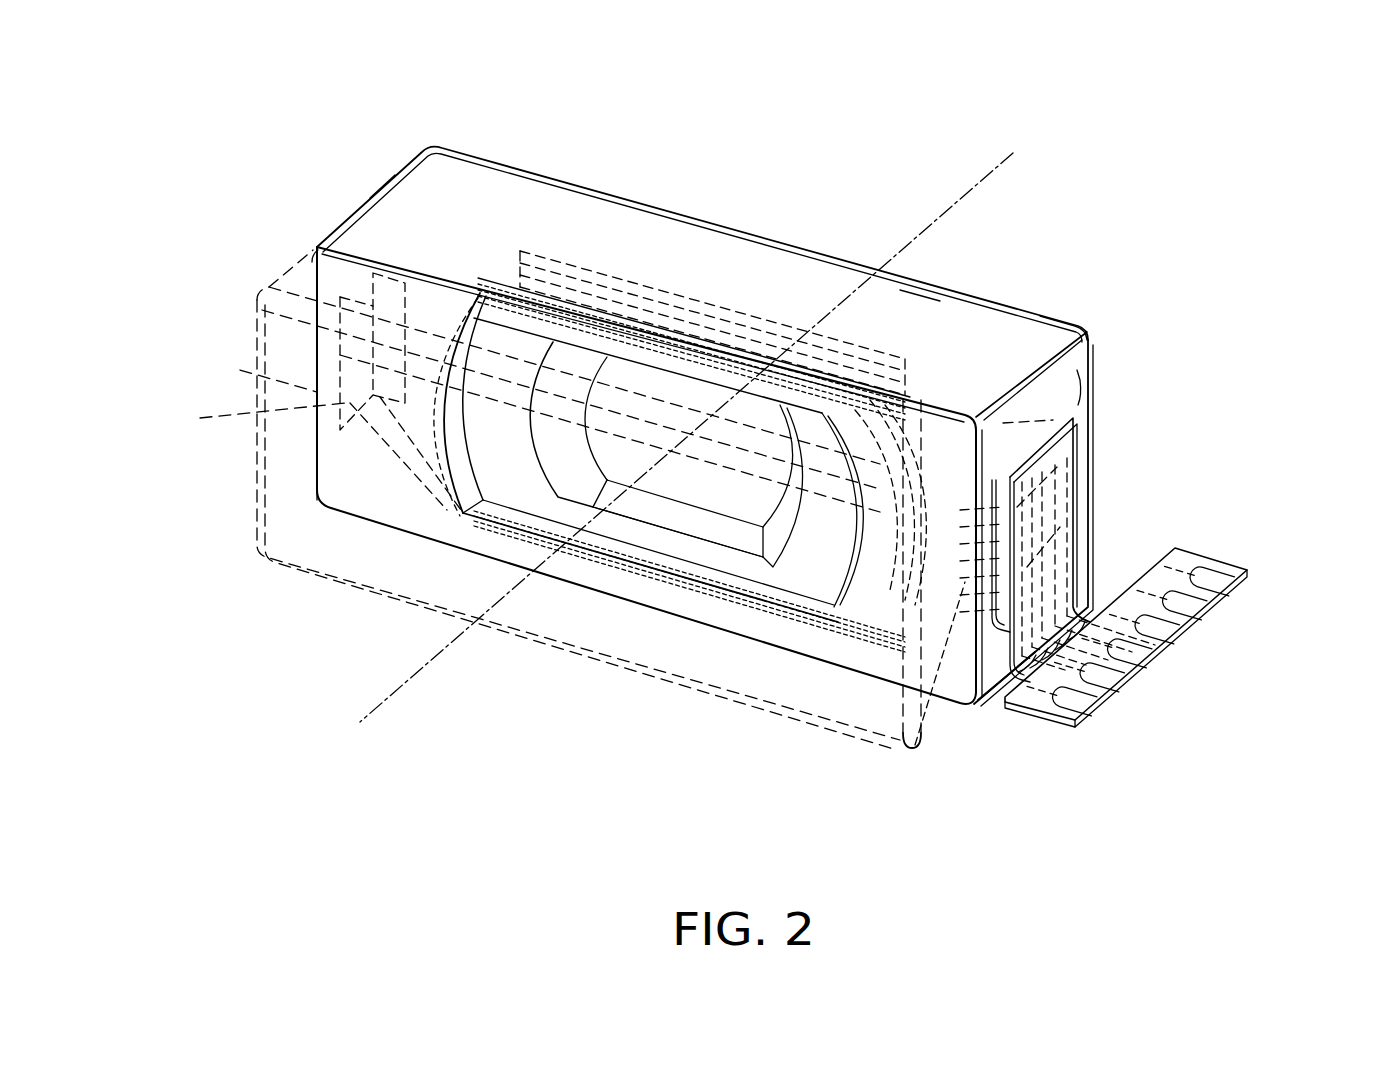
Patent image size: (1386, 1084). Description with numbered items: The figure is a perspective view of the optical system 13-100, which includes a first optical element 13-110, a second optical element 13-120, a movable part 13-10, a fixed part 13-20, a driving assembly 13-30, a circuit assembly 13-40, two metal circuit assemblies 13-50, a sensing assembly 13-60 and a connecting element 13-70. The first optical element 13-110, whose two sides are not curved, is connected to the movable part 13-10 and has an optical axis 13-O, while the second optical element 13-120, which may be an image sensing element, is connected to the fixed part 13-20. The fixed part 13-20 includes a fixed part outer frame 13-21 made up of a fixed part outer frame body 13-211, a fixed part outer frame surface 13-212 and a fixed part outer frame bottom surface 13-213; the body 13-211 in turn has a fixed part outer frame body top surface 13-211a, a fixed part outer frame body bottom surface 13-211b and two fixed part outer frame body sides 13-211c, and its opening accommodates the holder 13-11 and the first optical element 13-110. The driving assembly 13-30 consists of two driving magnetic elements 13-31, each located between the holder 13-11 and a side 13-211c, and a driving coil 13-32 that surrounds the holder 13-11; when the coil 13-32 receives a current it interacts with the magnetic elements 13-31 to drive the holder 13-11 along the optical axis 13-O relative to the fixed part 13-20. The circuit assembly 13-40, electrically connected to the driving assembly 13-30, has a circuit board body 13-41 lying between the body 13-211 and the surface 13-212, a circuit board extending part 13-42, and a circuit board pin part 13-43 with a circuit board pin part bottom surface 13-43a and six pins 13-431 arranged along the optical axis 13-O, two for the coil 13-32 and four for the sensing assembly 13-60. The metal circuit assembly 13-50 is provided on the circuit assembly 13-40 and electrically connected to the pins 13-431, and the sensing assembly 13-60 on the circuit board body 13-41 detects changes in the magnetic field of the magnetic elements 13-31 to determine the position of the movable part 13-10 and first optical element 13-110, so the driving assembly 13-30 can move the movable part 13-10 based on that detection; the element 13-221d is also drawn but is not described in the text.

The optical system 13-100 is at (180, 80).
The fixed part 13-20 is at (410, 135).
The fixed part outer frame 13-21 is at (853, 297).
The fixed part outer frame body 13-211 is at (970, 310).
The fixed part outer frame bottom surface 13-213 is at (917, 277).
The fixed part outer frame body top surface 13-211a is at (1057, 312).
The fixed part outer frame body bottom surface 13-211b is at (995, 683).
The fixed part outer frame body side 13-211c is at (1077, 378).
The fixed part outer frame surface 13-212 is at (313, 250).
The optical axis 13-O is at (719, 423).
The second optical element 13-120 is at (288, 262).
The driving magnetic element 13-31 is at (345, 354).
The driving coil 13-32 is at (786, 323).
The driving assembly 13-30 is at (1302, 70).
The circuit assembly 13-40 is at (1302, 156).
The circuit board body 13-41 is at (628, 305).
The circuit board extending part 13-42 is at (1073, 513).
The circuit board pin part 13-43 is at (1190, 563).
The pin 13-431 is at (1082, 703).
The circuit board pin part bottom surface 13-43a is at (1040, 713).
The metal circuit assembly 13-50 is at (900, 845).
The sensing assembly 13-60 is at (826, 565).
The connecting element 13-70 is at (1040, 440).
The holder 13-11 is at (458, 295).
The movable part 13-10 is at (752, 582).
The first optical element 13-110 is at (675, 482).
The holder bottom edge 13-221d is at (600, 548).